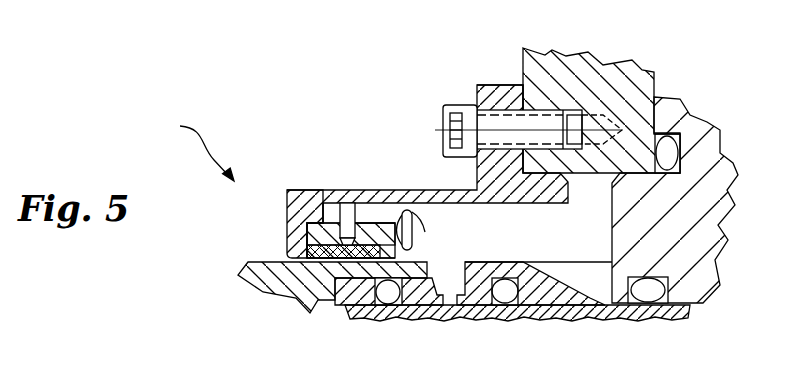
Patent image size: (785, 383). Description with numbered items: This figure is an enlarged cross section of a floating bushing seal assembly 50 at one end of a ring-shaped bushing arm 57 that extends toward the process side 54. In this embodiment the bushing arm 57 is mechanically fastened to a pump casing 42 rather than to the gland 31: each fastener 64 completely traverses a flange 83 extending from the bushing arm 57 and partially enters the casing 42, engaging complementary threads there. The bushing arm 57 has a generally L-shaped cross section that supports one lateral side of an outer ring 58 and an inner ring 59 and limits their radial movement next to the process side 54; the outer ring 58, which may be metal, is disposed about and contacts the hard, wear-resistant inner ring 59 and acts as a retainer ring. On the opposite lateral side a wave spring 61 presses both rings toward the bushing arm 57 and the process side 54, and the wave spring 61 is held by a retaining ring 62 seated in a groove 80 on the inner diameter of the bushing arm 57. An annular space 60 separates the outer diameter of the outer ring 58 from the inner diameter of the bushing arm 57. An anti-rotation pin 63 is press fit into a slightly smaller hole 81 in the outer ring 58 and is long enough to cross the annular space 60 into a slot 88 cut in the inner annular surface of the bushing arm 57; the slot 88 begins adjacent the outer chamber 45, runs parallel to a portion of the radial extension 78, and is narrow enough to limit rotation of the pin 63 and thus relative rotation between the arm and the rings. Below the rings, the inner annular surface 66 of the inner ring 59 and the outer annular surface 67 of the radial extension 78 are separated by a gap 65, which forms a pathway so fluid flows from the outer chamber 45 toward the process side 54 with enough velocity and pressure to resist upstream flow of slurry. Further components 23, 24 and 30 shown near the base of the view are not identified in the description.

The first clamp member 23 is at (408, 305).
The second clamp member 24 is at (497, 308).
The base seal strip 30 is at (593, 308).
The gland 31 is at (695, 232).
The casing 42 is at (523, 52).
The outer chamber 45 is at (568, 245).
The floating bushing seal assembly 50 is at (190, 149).
The process side 54 is at (172, 86).
The bushing arm 57 is at (362, 222).
The outer ring 58 is at (331, 223).
The inner ring 59 is at (303, 258).
The annular space 60 is at (303, 203).
The wave spring 61 is at (396, 220).
The retaining ring 62 is at (403, 210).
The anti-rotation pin 63 is at (343, 223).
The fastener 64 is at (452, 104).
The gap 65 is at (295, 262).
The inner annular surface 66 is at (300, 225).
The outer annular surface 67 is at (320, 262).
The radial extension 78 is at (312, 297).
The groove 80 is at (414, 212).
The hole 81 is at (372, 300).
The flange 83 is at (497, 85).
The slot 88 is at (349, 205).